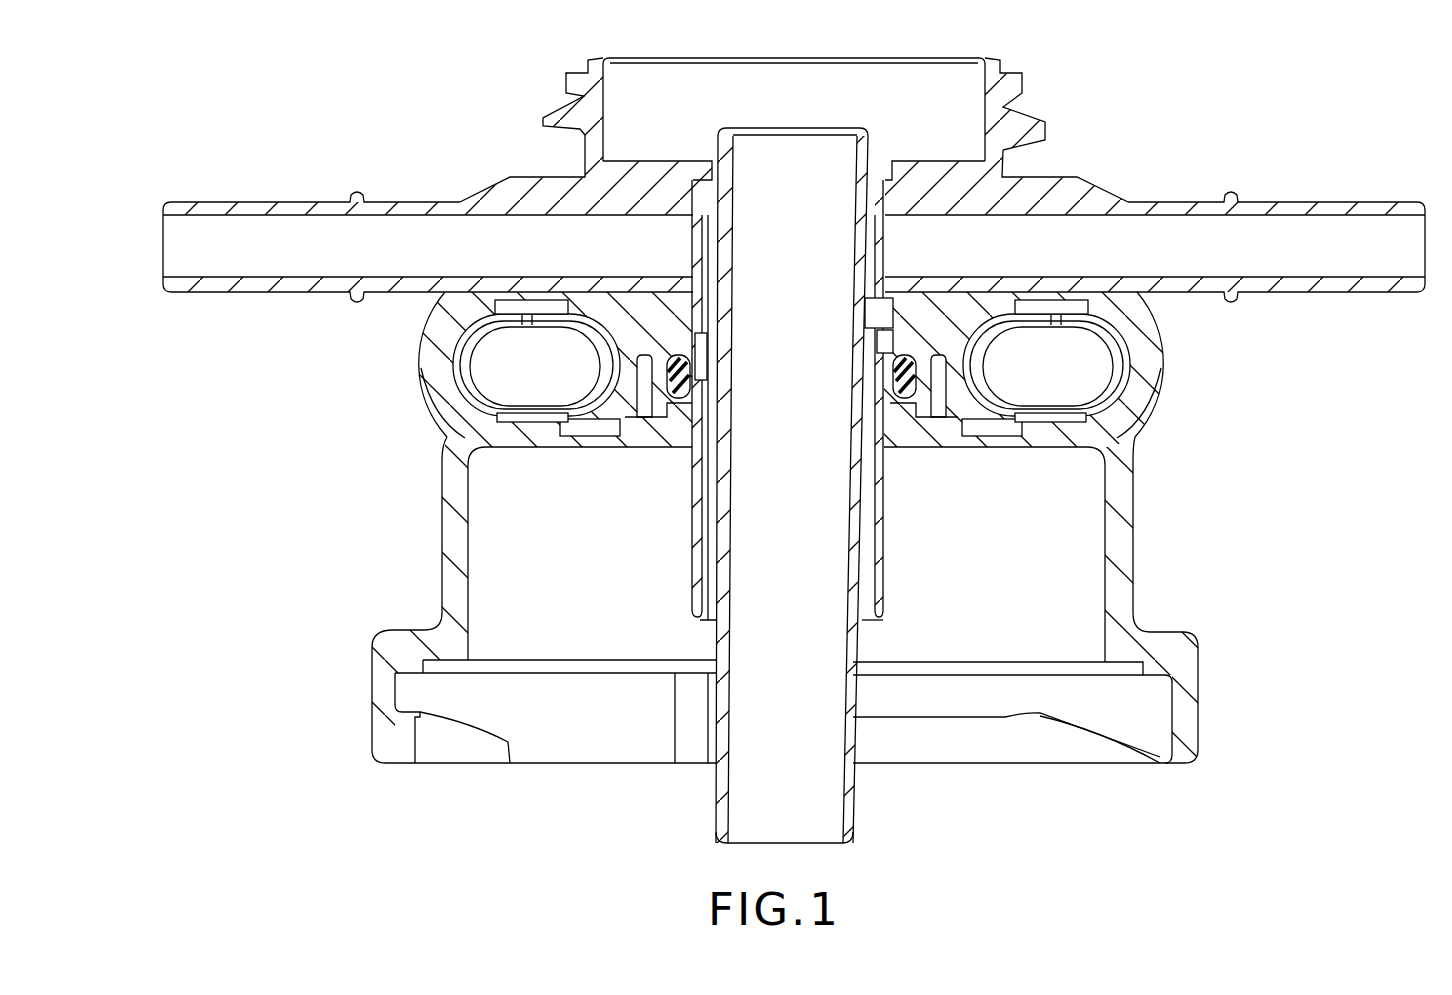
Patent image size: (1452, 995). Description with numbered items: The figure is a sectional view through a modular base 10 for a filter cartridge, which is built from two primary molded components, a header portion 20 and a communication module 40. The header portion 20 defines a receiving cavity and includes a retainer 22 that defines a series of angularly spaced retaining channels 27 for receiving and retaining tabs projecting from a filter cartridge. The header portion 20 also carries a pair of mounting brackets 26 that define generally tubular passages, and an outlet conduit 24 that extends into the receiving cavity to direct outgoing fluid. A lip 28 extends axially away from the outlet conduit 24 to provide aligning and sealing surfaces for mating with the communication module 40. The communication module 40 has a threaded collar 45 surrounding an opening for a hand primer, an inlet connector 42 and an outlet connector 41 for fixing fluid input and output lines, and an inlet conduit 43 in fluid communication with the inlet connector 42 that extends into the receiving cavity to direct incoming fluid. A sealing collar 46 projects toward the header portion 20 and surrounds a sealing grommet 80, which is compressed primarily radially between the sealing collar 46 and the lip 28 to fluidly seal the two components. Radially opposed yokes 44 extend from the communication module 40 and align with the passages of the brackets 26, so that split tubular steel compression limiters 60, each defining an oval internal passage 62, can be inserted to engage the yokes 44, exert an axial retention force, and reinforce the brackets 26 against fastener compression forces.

The base 10 is at (794, 450).
The header portion 20 is at (1140, 507).
The retainer 22 is at (372, 715).
The outlet conduit 24 is at (885, 555).
The mounting brackets 26 is at (430, 352).
The retaining channels 27 is at (557, 733).
The lip 28 is at (882, 345).
The communication module 40 is at (1058, 172).
The outlet connector 41 is at (242, 203).
The inlet connector 42 is at (1273, 203).
The inlet conduit 43 is at (853, 815).
The yokes 44 is at (612, 410).
The threaded collar 45 is at (564, 77).
The sealing collar 46 is at (895, 315).
The compression limiters 60 is at (455, 390).
The oval internal passage 62 is at (547, 378).
The sealing grommet 80 is at (895, 377).